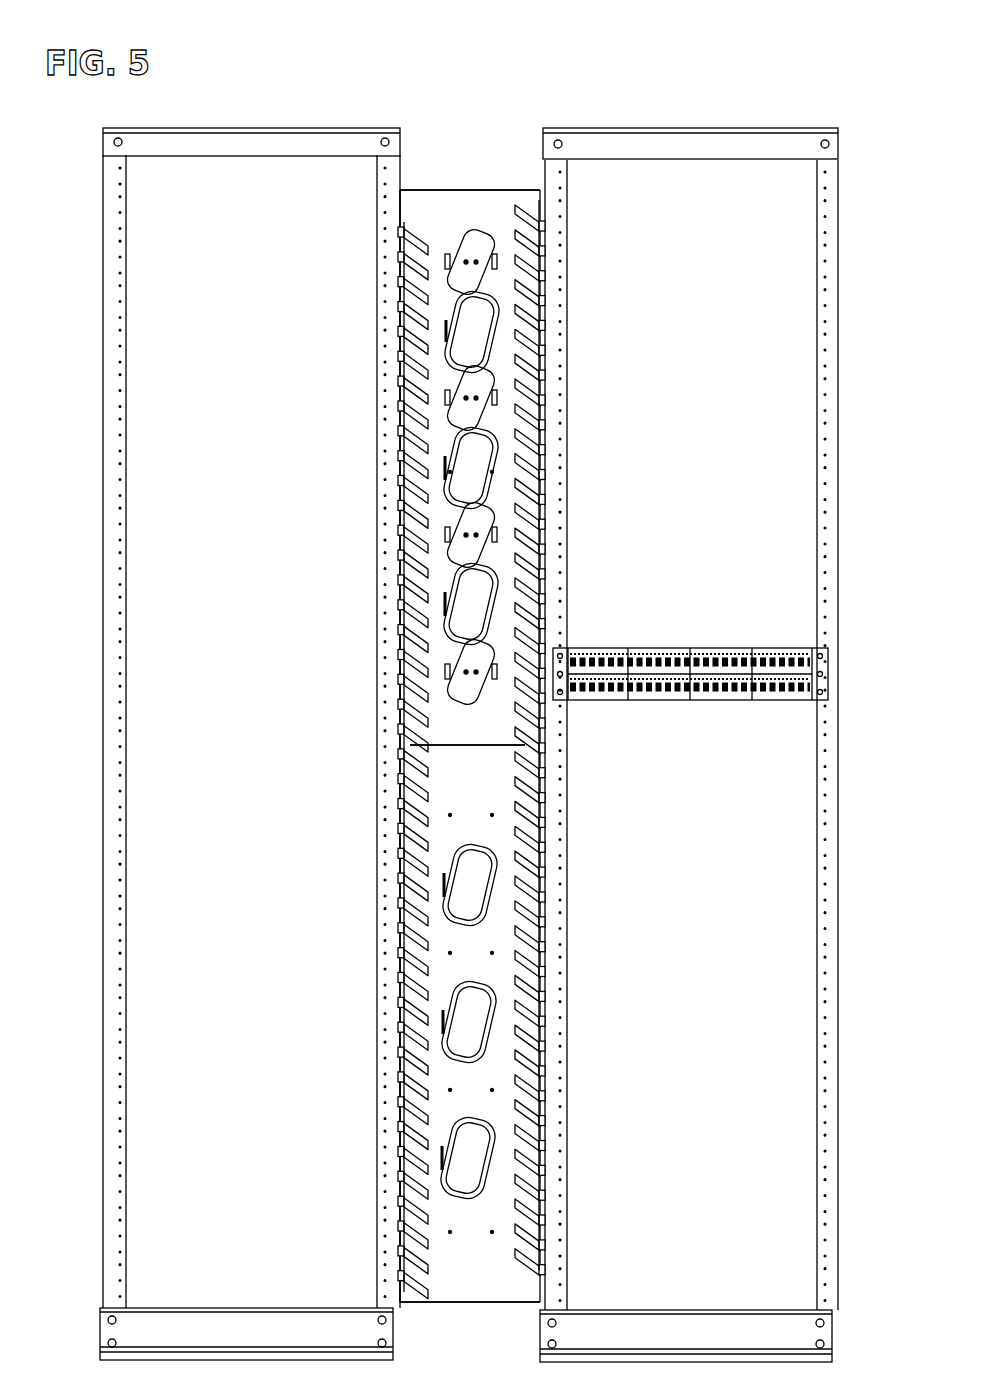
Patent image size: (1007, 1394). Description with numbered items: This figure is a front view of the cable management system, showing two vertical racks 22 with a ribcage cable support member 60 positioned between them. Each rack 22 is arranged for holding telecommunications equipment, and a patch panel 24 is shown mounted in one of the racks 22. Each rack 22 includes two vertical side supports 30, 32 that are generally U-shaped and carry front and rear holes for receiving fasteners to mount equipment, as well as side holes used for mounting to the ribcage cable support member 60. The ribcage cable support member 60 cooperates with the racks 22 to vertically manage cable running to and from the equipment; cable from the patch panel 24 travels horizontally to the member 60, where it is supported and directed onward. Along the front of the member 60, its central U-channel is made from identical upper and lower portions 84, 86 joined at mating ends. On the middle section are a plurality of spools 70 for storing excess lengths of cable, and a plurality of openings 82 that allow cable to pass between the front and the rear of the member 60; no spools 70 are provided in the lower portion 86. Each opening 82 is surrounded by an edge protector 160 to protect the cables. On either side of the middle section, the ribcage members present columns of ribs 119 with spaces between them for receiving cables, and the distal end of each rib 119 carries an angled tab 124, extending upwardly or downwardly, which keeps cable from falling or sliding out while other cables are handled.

The vertical rack 22 is at (236, 128).
The patch panel 24 is at (648, 646).
The side support 30 is at (122, 1103).
The side support 32 is at (378, 1100).
The ribcage cable support member 60 is at (500, 440).
The spool 70 is at (450, 255).
The opening 82 is at (475, 477).
The upper portion 84 is at (500, 378).
The lower portion 86 is at (480, 786).
The rib 119 is at (405, 230).
The tab 124 is at (418, 238).
The edge protector 160 is at (446, 480).